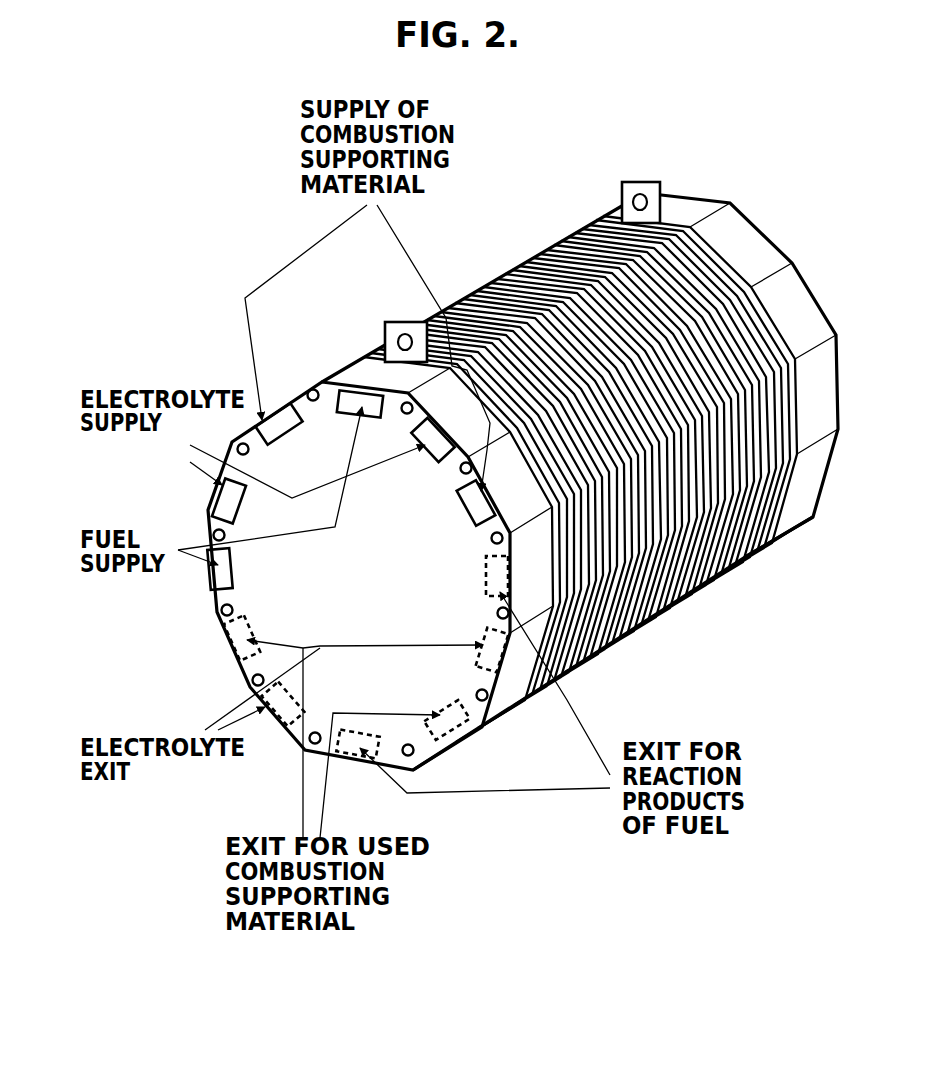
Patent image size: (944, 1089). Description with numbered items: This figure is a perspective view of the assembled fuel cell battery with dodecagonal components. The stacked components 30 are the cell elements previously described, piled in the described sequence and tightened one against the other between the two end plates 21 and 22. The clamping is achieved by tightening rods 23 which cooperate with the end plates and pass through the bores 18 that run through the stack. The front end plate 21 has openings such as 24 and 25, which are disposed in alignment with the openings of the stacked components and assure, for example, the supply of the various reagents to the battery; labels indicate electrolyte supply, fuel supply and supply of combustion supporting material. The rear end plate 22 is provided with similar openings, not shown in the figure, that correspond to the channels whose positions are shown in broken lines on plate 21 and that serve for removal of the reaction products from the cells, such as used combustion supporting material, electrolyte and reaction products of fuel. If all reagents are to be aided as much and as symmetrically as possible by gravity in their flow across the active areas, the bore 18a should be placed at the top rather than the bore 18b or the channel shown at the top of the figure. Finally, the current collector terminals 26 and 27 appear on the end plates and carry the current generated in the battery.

The bores 18 is at (223, 617).
The bore 18a is at (298, 392).
The bore 18b is at (380, 400).
The end plate 21 is at (270, 727).
The end plate 22 is at (768, 242).
The tightening rods 23 is at (314, 401).
The opening 24 is at (441, 443).
The opening 25 is at (475, 503).
The current collector terminal 26 is at (403, 322).
The current collector terminal 27 is at (652, 182).
The stacked components 30 is at (680, 573).